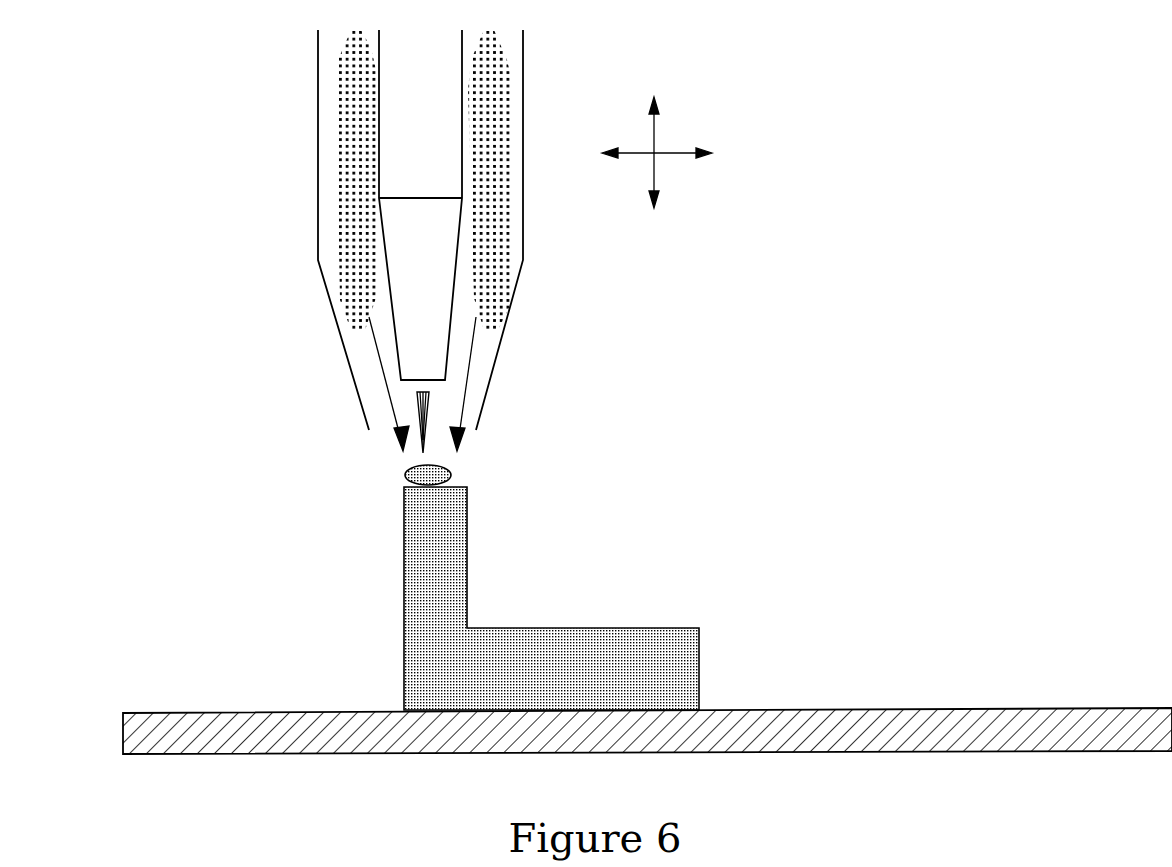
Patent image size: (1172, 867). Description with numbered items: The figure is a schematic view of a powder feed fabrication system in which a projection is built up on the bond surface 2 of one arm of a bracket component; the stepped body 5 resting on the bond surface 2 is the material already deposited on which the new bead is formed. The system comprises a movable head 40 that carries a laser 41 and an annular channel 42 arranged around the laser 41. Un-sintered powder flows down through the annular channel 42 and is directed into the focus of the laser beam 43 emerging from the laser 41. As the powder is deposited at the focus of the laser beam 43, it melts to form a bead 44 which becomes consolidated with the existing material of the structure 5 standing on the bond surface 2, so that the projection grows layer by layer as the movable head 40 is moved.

The bond surface 2 is at (912, 708).
The deposited structure 5 is at (597, 628).
The movable head 40 is at (262, 237).
The laser 41 is at (443, 287).
The annular channel 42 is at (505, 128).
The laser beam 43 is at (423, 413).
The bead 44 is at (452, 475).